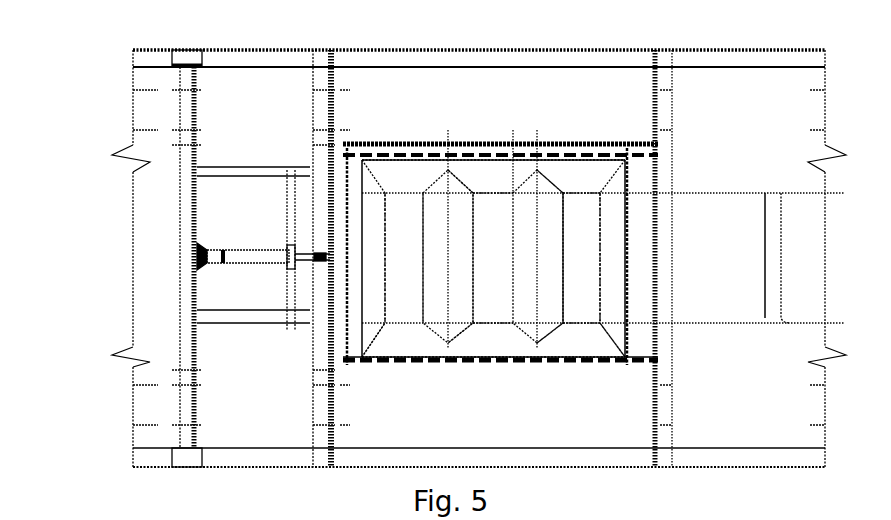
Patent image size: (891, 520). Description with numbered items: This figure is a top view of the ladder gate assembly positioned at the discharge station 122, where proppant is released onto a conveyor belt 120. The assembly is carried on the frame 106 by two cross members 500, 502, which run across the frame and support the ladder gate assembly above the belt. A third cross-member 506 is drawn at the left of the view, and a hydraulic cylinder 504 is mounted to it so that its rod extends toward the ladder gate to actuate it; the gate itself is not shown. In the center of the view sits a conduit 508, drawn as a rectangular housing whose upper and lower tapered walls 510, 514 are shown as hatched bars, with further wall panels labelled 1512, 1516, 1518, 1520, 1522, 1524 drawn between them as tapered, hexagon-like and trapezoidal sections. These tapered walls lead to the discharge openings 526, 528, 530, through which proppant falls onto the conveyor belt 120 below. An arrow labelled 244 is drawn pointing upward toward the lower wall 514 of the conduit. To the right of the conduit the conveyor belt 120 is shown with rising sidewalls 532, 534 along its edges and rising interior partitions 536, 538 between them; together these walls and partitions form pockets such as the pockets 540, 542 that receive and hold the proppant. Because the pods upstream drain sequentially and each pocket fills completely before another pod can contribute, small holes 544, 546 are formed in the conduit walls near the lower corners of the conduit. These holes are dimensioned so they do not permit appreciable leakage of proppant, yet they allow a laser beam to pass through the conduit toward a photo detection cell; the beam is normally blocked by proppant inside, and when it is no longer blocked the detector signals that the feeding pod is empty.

The frame 106 is at (618, 50).
The discharge station 122 is at (403, 60).
The conveyor belt 120 is at (745, 205).
The lower hatched plate 244 is at (490, 347).
The cross member 500 is at (672, 124).
The cross member 502 is at (323, 148).
The hydraulic cylinder 504 is at (246, 250).
The third cross-member 506 is at (230, 93).
The conduit 508 is at (590, 157).
The tapered wall 510 is at (493, 172).
The tapered wall 514 is at (493, 348).
The discharge opening 526 is at (417, 256).
The discharge opening 528 is at (498, 258).
The discharge opening 530 is at (570, 271).
The rising sidewall 532 is at (806, 205).
The rising sidewall 534 is at (786, 322).
The rising interior partition 536 is at (675, 244).
The rising interior partition 538 is at (766, 283).
The pocket 540 is at (676, 367).
The pocket 542 is at (800, 237).
The small hole 544 is at (391, 327).
The small hole 546 is at (595, 327).
The left trapezoid panel 1512 is at (373, 258).
The right trapezoid panel 1516 is at (594, 258).
The second hexagon right half 1518 is at (550, 256).
The second hexagon left half 1520 is at (538, 239).
The first hexagon right half 1522 is at (460, 256).
The first hexagon left half 1524 is at (448, 239).